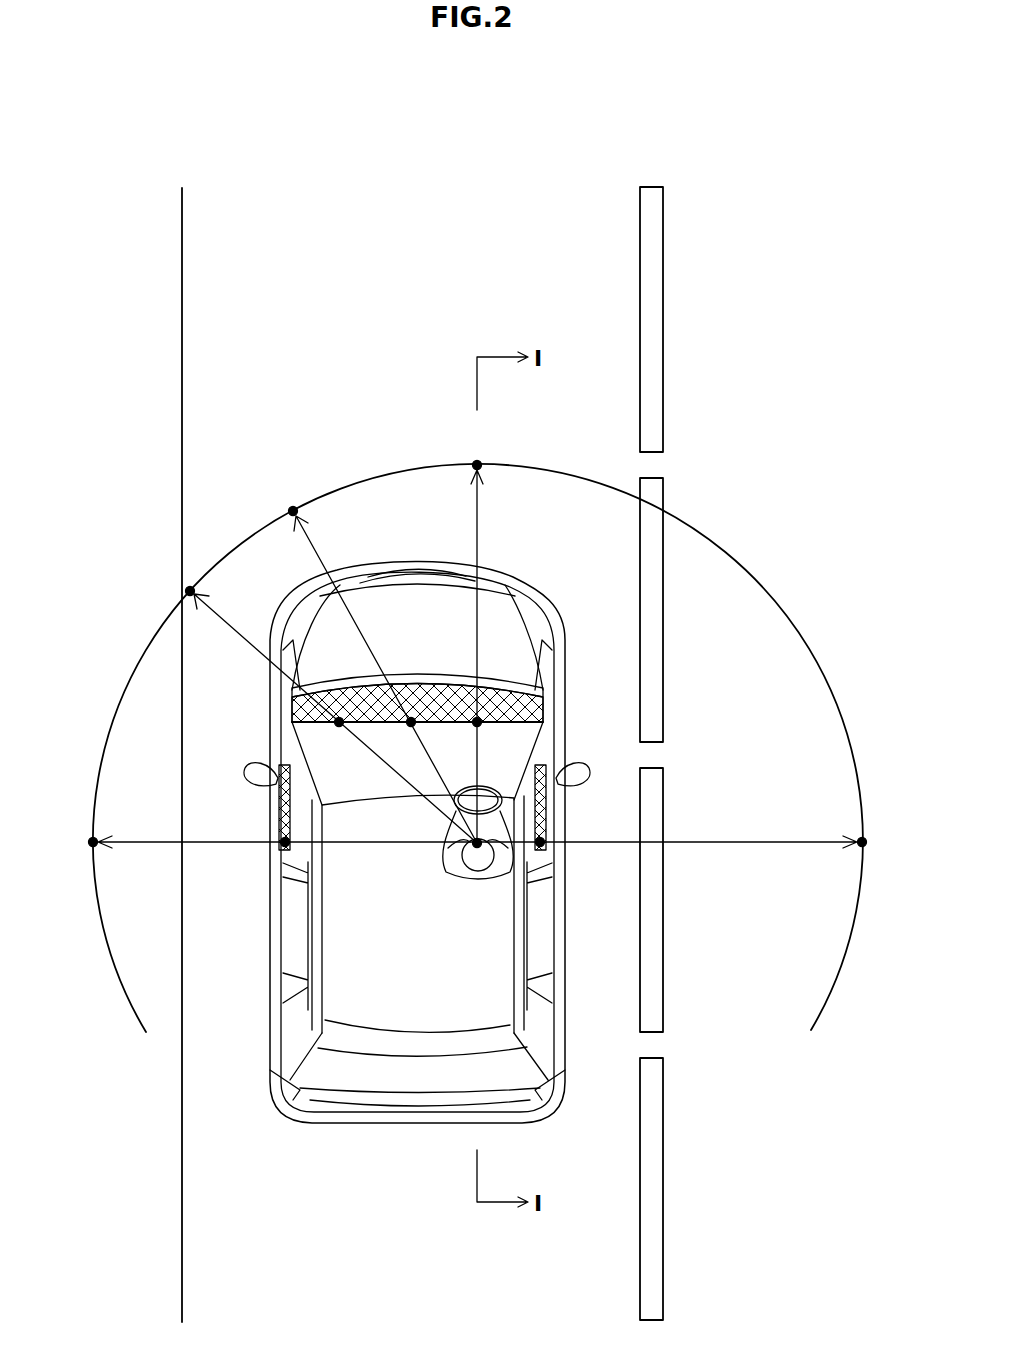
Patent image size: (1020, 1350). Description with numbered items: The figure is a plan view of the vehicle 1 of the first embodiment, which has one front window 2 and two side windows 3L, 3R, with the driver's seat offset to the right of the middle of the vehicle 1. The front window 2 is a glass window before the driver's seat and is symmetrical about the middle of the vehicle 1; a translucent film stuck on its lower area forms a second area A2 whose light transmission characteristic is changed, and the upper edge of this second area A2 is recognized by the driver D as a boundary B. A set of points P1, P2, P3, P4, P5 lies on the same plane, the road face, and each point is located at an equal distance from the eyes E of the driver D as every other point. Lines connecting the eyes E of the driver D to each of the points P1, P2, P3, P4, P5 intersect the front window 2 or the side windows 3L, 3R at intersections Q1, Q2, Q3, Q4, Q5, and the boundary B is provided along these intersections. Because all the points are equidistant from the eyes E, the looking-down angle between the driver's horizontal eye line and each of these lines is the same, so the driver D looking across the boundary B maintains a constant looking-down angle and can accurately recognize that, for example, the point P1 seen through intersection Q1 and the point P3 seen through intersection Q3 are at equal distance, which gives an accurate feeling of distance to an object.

The vehicle 1 is at (334, 1141).
The front window 2 is at (312, 735).
The left side window 3L is at (282, 819).
The right side window 3R is at (543, 812).
The second area A2 is at (505, 693).
The boundary B is at (449, 711).
The driver D is at (477, 870).
The eyes of the driver E is at (460, 852).
The point P1 is at (479, 641).
The point P2 is at (372, 665).
The point P3 is at (314, 707).
The point P4 is at (267, 849).
The point P5 is at (690, 849).
The intersection Q1 is at (478, 722).
The intersection Q2 is at (411, 718).
The intersection Q3 is at (339, 718).
The intersection Q4 is at (283, 845).
The intersection Q5 is at (542, 845).